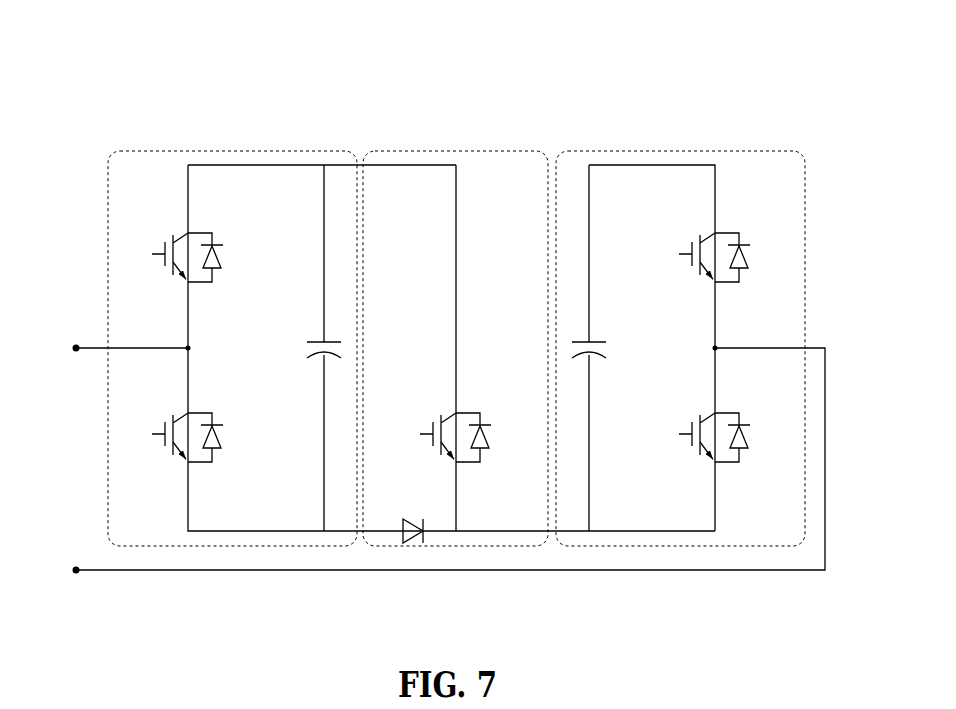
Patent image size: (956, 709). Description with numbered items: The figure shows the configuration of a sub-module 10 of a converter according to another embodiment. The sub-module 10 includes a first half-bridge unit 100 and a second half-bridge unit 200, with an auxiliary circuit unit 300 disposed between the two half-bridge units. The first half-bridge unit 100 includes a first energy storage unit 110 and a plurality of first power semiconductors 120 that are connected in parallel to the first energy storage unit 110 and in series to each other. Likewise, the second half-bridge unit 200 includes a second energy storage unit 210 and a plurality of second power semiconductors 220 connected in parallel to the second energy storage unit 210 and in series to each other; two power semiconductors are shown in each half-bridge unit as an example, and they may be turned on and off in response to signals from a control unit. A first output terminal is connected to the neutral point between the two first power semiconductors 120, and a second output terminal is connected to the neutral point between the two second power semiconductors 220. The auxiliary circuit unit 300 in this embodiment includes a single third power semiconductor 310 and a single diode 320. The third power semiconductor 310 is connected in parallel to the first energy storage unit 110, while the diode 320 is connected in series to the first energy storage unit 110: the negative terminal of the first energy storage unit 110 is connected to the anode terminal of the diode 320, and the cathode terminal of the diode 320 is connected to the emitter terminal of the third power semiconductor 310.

The sub-module 10 is at (425, 81).
The first half-bridge unit 100 is at (246, 141).
The first energy storage unit 110 is at (321, 337).
The first power semiconductors 120 is at (216, 289).
The second half-bridge unit 200 is at (694, 141).
The second energy storage unit 210 is at (593, 340).
The second power semiconductors 220 is at (698, 287).
The auxiliary circuit unit 300 is at (444, 141).
The third power semiconductor 310 is at (478, 404).
The diode 320 is at (420, 544).